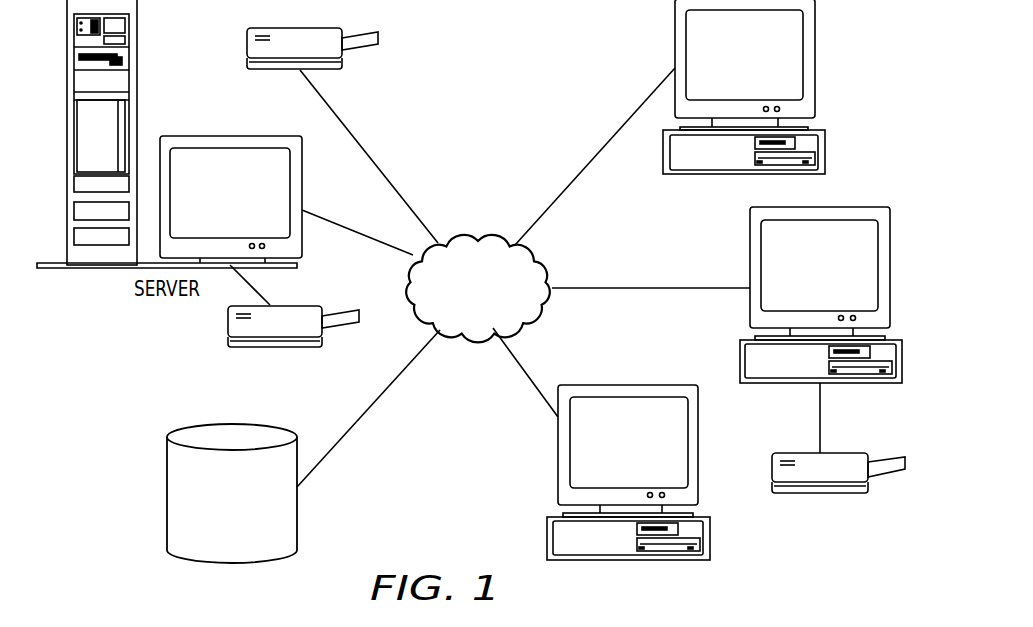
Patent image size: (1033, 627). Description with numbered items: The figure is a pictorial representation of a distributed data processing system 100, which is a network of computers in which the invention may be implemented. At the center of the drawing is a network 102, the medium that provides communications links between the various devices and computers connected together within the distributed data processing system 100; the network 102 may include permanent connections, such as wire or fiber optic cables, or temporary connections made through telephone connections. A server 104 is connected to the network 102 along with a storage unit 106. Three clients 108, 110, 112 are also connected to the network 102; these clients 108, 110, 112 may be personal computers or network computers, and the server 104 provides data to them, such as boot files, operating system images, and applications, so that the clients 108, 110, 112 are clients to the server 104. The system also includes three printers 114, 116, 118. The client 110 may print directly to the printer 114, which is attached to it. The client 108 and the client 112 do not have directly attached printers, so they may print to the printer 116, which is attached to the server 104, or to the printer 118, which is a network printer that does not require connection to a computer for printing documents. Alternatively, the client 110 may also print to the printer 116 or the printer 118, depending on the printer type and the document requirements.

The distributed data processing system 100 is at (515, 56).
The network 102 is at (498, 301).
The server 104 is at (250, 202).
The storage unit 106 is at (252, 514).
The client 108 is at (765, 70).
The client 110 is at (840, 277).
The client 112 is at (648, 454).
The printer 114 is at (798, 453).
The printer 116 is at (228, 330).
The printer 118 is at (247, 50).